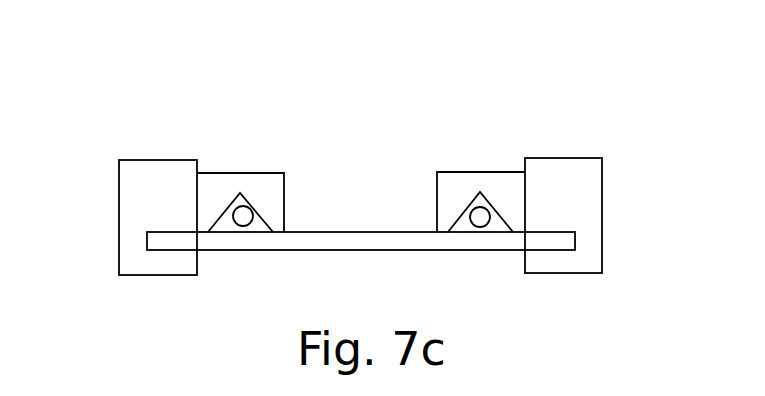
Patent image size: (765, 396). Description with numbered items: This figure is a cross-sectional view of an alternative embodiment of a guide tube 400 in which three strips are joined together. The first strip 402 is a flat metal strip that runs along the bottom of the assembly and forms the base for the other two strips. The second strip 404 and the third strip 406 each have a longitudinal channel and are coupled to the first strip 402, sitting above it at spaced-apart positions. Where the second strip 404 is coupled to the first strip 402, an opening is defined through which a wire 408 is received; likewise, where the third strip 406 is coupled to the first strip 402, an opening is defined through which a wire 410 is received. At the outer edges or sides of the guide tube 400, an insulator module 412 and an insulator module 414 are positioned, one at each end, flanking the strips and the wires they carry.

The guide tube 400 is at (537, 121).
The first strip 402 is at (392, 250).
The second strip 404 is at (455, 172).
The third strip 406 is at (268, 172).
The wire 408 is at (485, 207).
The wire 410 is at (233, 207).
The insulator module 412 is at (580, 158).
The insulator module 414 is at (140, 160).